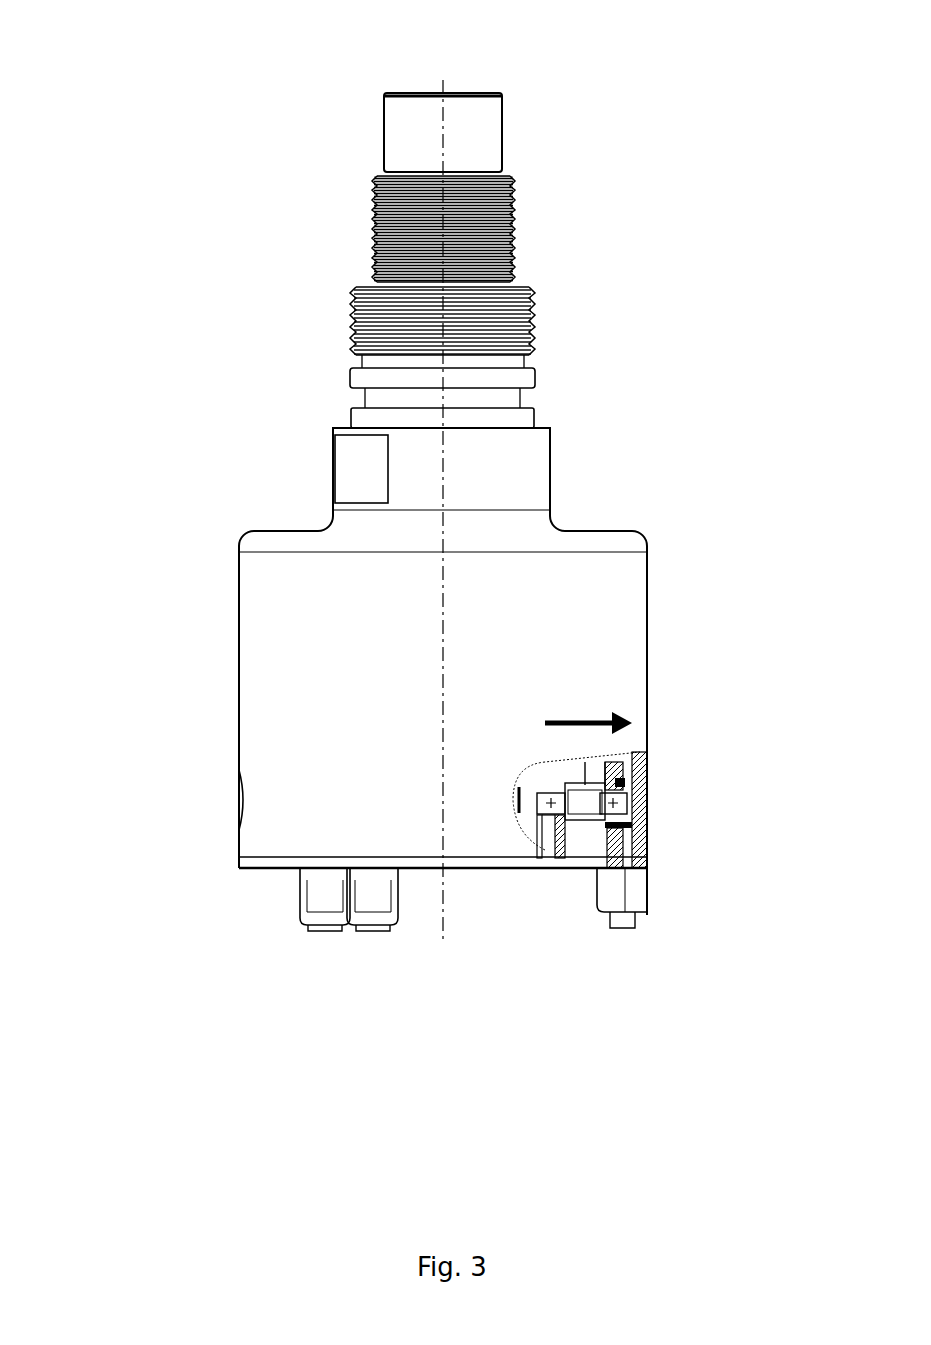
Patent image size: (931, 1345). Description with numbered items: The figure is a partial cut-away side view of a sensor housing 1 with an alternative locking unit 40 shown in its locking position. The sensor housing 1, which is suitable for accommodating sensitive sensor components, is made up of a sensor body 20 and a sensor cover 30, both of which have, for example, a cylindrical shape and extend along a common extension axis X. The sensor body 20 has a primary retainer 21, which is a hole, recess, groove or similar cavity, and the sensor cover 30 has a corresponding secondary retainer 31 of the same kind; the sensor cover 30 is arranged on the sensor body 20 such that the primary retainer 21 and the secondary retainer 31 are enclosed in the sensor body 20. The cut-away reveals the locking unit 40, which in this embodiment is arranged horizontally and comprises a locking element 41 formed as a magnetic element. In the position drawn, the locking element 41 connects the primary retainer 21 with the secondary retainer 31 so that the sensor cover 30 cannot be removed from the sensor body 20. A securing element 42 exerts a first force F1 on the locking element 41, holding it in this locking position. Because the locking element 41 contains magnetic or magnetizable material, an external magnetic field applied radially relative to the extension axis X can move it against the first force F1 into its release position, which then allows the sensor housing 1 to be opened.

The sensor housing 1 is at (146, 240).
The extension axis X is at (443, 90).
The sensor body 20 is at (228, 612).
The primary retainer 21 is at (628, 840).
The sensor cover 30 is at (300, 937).
The secondary retainer 31 is at (556, 833).
The locking unit 40 is at (652, 832).
The locking element 41 is at (647, 800).
The securing element 42 is at (553, 829).
The first force F1 is at (607, 732).